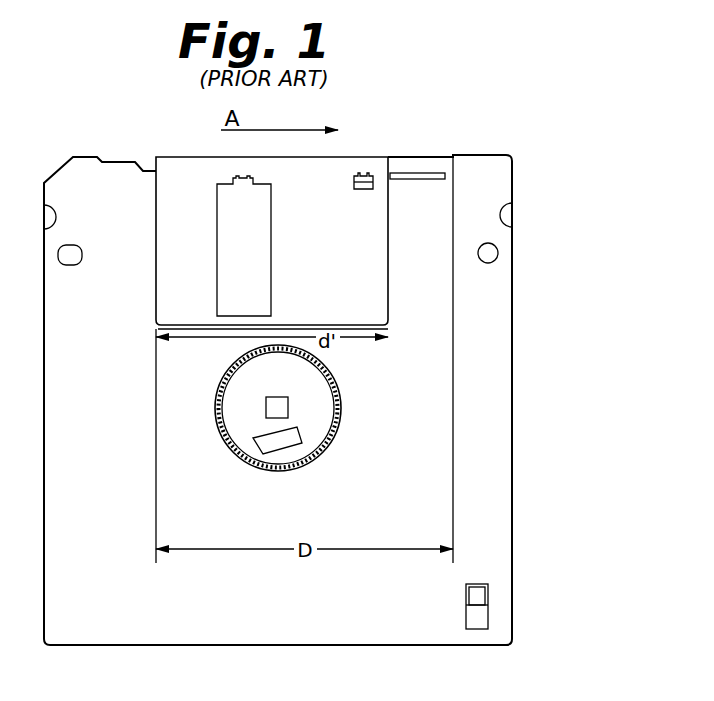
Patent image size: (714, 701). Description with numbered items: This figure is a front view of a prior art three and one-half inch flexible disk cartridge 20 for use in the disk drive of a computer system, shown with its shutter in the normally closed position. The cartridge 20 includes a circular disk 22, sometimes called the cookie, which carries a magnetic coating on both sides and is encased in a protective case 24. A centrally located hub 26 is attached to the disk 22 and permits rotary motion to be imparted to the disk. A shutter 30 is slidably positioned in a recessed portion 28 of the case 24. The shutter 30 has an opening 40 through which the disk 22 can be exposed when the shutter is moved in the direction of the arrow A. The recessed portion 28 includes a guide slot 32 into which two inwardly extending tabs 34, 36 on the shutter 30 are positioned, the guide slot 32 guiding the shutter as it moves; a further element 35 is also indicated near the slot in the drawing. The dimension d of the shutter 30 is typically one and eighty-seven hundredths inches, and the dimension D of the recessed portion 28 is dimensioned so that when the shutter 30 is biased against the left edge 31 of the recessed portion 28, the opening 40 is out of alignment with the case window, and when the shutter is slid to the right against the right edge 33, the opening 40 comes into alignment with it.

The cartridge 20 is at (514, 568).
The circular disk 22 is at (340, 417).
The protective case 24 is at (492, 515).
The hub 26 is at (313, 433).
The recessed portion 28 is at (442, 305).
The shutter 30 is at (392, 220).
The left edge of the recessed portion 31 is at (158, 263).
The guide slot 32 is at (428, 176).
The right edge of the recessed portion 33 is at (449, 254).
The inwardly extending tab 34 is at (363, 174).
The shutter top guide 35 is at (415, 156).
The inwardly extending tab 36 is at (240, 178).
The opening 40 is at (217, 255).